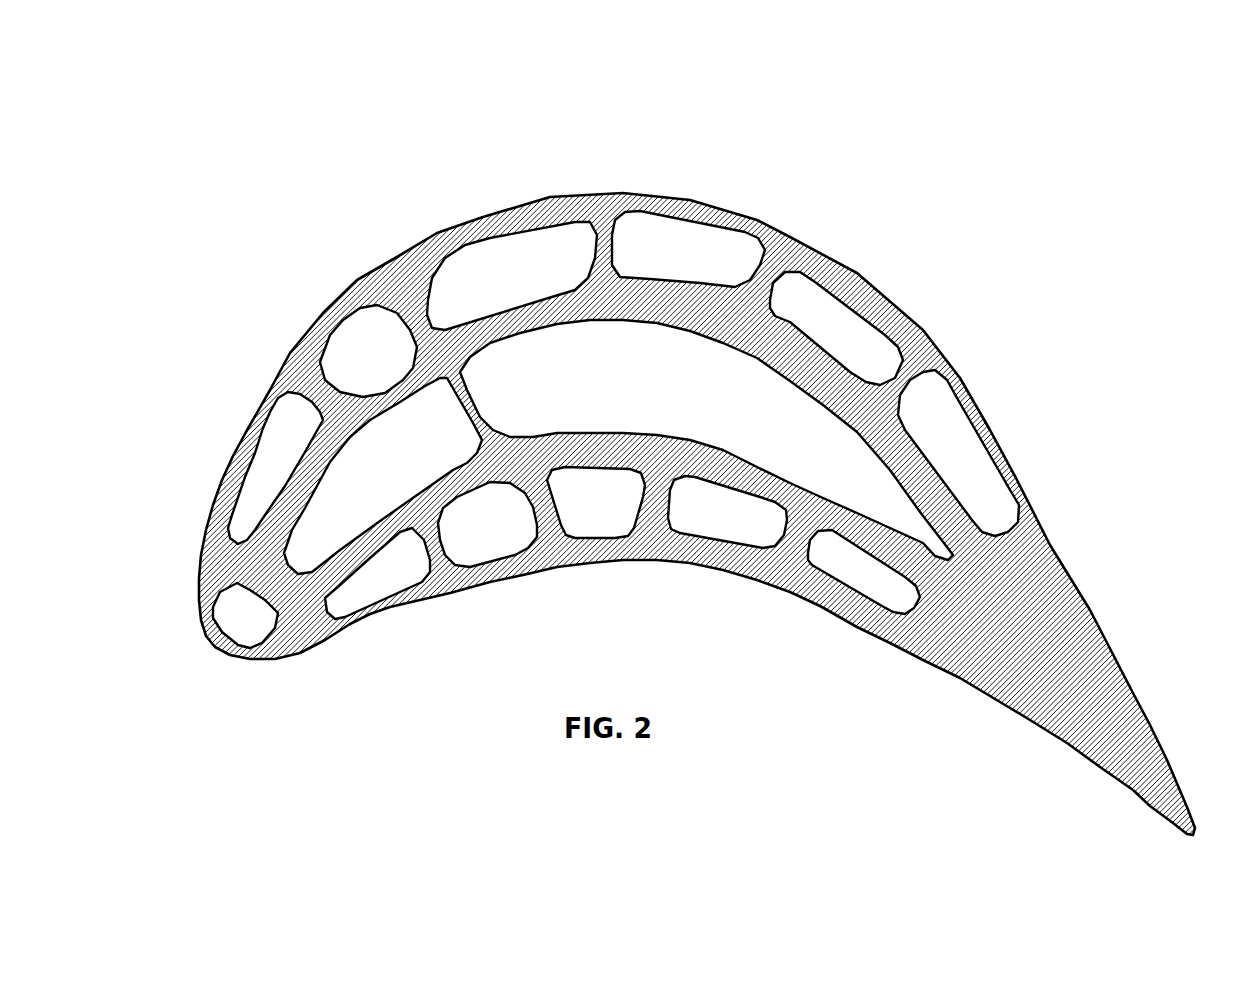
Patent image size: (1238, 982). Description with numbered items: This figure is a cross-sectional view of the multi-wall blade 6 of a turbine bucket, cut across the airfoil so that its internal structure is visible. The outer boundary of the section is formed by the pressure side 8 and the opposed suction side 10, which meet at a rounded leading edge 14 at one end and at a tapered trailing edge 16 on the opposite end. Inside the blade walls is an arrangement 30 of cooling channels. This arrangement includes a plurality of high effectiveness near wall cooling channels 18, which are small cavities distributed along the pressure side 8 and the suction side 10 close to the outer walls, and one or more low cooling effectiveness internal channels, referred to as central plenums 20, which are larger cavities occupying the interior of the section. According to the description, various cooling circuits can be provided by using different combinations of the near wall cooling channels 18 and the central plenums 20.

The multi-wall blade 6 is at (980, 140).
The suction side 10 is at (645, 138).
The arrangement of cooling channels 30 is at (388, 286).
The pressure side 8 is at (567, 595).
The leading edge 14 is at (187, 658).
The trailing edge 16 is at (1137, 833).
The near wall cooling channels 18 is at (349, 371).
The central plenums 20 is at (673, 393).